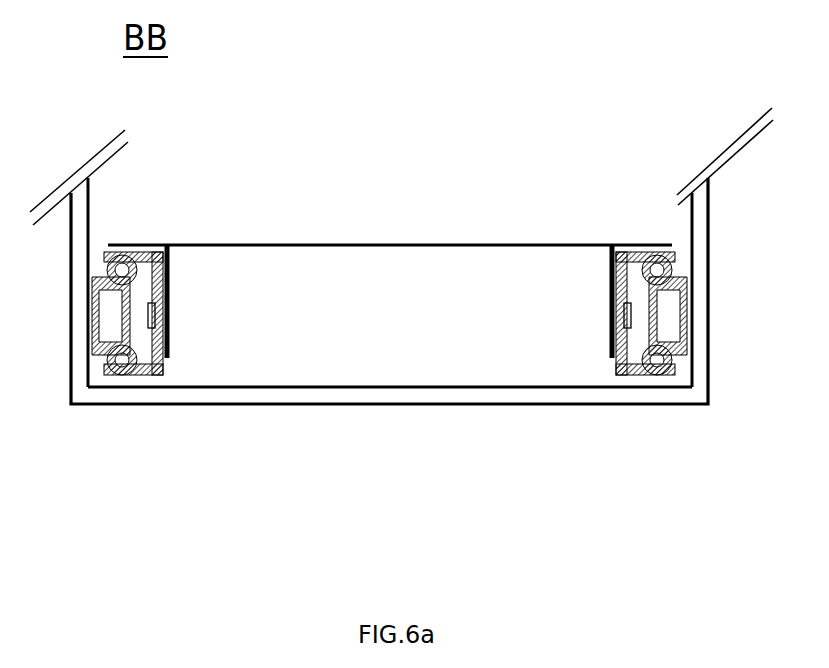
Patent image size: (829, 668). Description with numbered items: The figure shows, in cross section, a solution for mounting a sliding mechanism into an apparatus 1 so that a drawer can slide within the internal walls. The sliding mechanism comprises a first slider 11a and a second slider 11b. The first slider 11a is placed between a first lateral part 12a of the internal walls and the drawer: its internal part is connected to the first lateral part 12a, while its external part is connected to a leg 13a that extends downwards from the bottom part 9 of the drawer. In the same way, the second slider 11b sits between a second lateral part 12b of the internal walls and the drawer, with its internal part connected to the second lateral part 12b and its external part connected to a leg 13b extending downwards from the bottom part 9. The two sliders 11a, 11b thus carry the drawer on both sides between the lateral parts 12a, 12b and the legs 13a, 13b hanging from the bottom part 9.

The housing 1 is at (708, 340).
The bottom part 9 is at (422, 245).
The first slider 11a is at (130, 373).
The second slider 11b is at (658, 375).
The first lateral part 12a is at (88, 213).
The second lateral part 12b is at (692, 218).
The leg 13a is at (172, 310).
The leg 13b is at (610, 305).